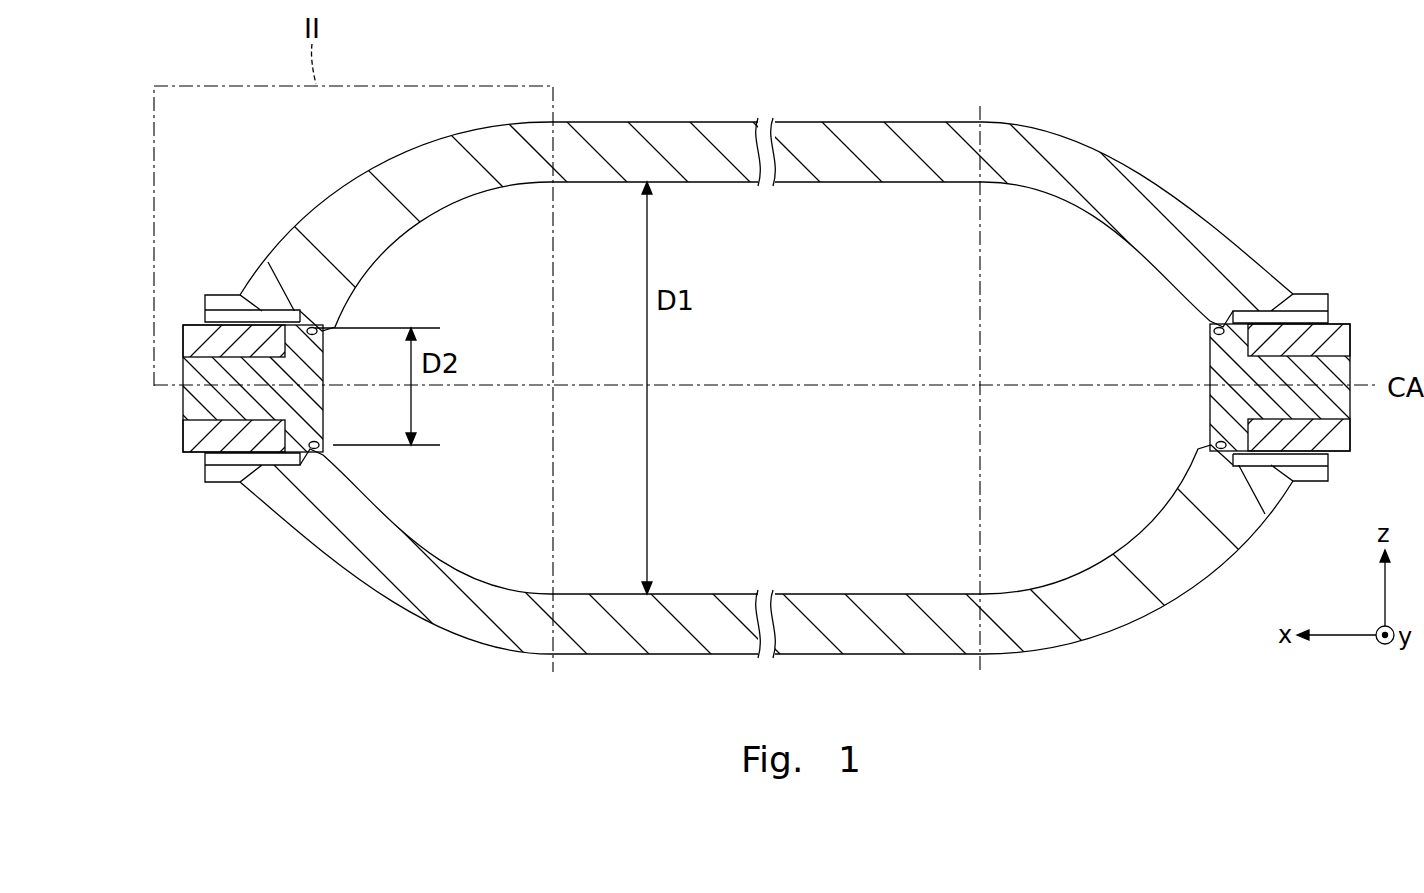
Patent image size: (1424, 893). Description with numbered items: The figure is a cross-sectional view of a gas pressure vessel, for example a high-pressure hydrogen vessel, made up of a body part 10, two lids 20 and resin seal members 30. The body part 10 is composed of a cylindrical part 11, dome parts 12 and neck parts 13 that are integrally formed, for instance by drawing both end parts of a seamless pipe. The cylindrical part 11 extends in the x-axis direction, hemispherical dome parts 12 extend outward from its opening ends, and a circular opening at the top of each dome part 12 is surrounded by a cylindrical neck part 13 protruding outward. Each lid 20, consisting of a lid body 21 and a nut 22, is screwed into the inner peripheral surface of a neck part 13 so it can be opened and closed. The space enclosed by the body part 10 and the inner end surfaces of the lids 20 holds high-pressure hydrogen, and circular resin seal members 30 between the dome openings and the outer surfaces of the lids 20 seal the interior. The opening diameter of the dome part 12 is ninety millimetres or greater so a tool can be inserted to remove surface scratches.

The body part 10 is at (1087, 84).
The cylindrical part 11 is at (610, 120).
The dome part 12 is at (347, 190).
The neck part 13 is at (220, 300).
The lid 20 is at (108, 380).
The lid body 21 is at (183, 406).
The nut 22 is at (183, 446).
The resin seal member 30 is at (320, 446).